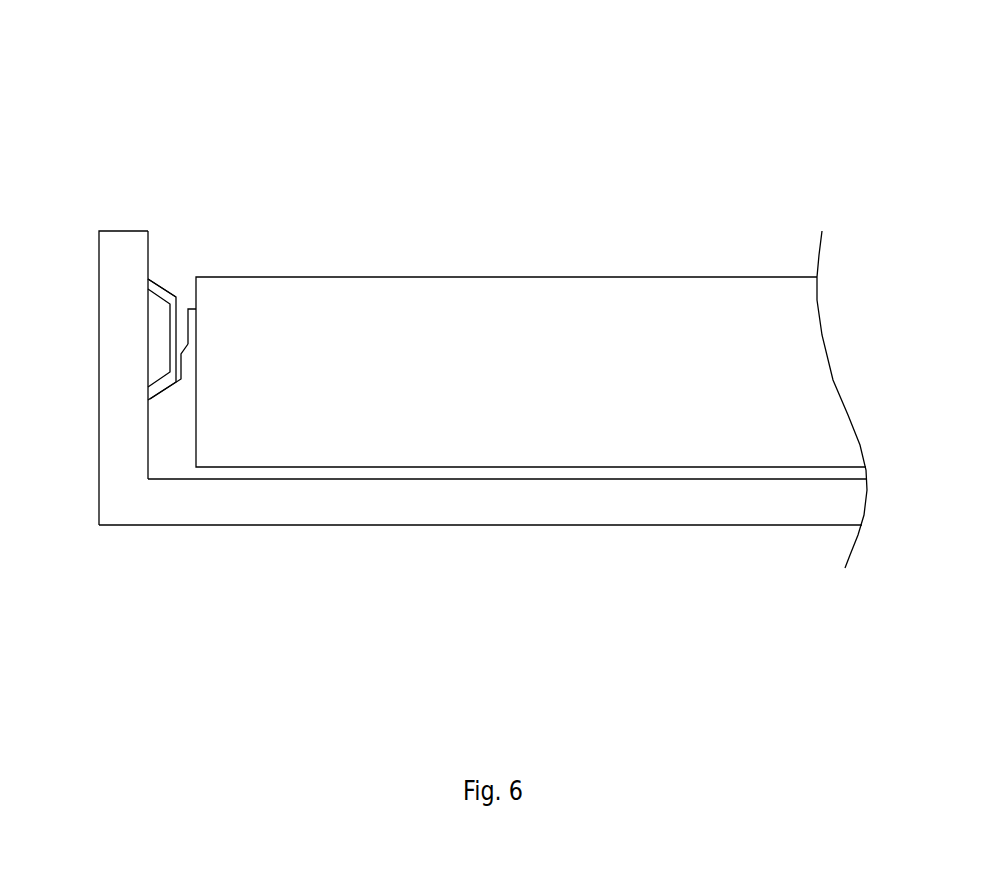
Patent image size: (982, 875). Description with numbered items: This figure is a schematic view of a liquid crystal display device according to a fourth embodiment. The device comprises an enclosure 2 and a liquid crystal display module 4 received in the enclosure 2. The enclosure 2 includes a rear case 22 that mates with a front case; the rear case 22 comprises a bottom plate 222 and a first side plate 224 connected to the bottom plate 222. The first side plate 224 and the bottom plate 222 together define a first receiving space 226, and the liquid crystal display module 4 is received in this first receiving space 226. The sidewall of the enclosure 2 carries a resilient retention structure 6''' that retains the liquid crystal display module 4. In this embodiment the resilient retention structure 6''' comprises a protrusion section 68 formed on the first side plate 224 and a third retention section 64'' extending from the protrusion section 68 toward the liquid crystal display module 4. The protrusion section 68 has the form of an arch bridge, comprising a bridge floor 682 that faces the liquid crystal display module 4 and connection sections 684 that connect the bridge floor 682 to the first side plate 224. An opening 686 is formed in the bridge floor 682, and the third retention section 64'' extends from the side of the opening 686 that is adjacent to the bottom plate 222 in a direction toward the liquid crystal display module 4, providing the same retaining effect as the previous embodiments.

The enclosure 2 is at (474, 480).
The rear case 22 is at (471, 480).
The bottom plate 222 is at (145, 677).
The first side plate 224 is at (120, 385).
The first receiving space 226 is at (587, 476).
The liquid crystal display module 4 is at (533, 332).
The resilient retention structure 6''' is at (219, 212).
The third retention section 64'' is at (243, 223).
The protrusion section 68 is at (219, 250).
The bridge floor 682 is at (177, 332).
The connection sections 684 is at (160, 292).
The opening 686 is at (182, 322).